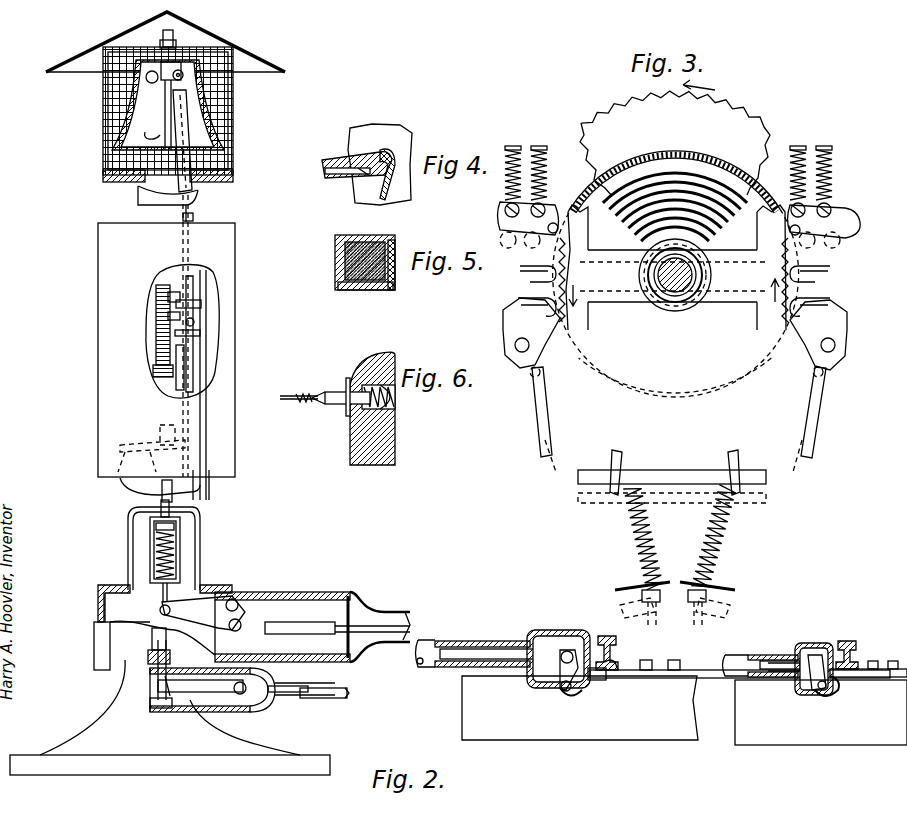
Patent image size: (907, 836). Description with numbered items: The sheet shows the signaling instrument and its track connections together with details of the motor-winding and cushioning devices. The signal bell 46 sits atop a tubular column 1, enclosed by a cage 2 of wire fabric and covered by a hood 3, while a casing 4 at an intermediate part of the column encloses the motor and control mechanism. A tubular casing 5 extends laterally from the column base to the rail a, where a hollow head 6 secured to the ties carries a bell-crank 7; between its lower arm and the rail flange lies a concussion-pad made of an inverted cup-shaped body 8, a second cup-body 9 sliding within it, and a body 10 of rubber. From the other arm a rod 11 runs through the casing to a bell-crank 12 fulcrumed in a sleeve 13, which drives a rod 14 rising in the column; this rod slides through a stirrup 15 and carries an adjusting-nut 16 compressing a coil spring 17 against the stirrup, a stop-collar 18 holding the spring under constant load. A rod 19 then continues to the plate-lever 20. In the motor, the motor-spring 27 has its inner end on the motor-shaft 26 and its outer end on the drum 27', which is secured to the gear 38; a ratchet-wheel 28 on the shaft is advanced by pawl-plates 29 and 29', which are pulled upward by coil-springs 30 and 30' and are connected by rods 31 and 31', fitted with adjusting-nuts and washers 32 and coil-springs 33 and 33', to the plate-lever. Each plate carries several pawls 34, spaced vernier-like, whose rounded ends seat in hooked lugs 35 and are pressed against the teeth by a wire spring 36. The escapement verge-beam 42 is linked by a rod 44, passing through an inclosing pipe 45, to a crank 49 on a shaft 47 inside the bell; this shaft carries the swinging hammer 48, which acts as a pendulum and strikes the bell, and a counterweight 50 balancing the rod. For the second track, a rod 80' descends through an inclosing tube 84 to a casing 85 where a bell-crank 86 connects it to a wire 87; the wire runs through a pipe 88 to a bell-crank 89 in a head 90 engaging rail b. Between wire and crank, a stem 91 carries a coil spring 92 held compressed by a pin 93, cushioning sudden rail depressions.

In FIG. 2, the tubular post or column 1 is at (202, 550).
In FIG. 2, the cage 2 is at (103, 100).
In FIG. 2, the hood 3 is at (90, 58).
In FIG. 2, the casing 4 is at (110, 384).
In FIG. 2, the tubular casing 5 is at (430, 645).
In FIG. 2, the hollow head 6 is at (557, 632).
In FIG. 2, the bell-crank 7 is at (585, 694).
In FIG. 2, the inverted cup-shaped body 8 is at (602, 676).
In FIG. 5, the inverted cup-shaped body 8 is at (385, 250).
In FIG. 2, the second cup-body 9 is at (598, 683).
In FIG. 5, the second cup-body 9 is at (391, 286).
In FIG. 5, the body of resilient material 10 is at (352, 284).
In FIG. 2, the rod 11 is at (366, 640).
In FIG. 2, the bell-crank 12 is at (248, 610).
In FIG. 2, the sleeve 13 is at (268, 592).
In FIG. 2, the rod 14 is at (160, 608).
In FIG. 2, the stirrup 15 is at (162, 540).
In FIG. 2, the adjusting-nut 16 is at (180, 535).
In FIG. 2, the coil spring 17 is at (156, 557).
In FIG. 2, the stop-collar 18 is at (190, 596).
In FIG. 2, the rod 19 is at (185, 512).
In FIG. 3, the plate-lever 20 is at (672, 472).
In FIG. 3, the motor-shaft 26 is at (675, 280).
In FIG. 3, the motor-spring 27 is at (684, 268).
In FIG. 2, the drum 27' is at (145, 330).
In FIG. 3, the drum 27' is at (676, 265).
In FIG. 3, the ratchet-wheel 28 is at (642, 220).
In FIG. 4, the pawl-plate 29 is at (381, 152).
In FIG. 3, the pawl-plate 29 is at (642, 255).
In FIG. 3, the pawl-plate 29' is at (834, 225).
In FIG. 3, the coil-spring 30 is at (541, 176).
In FIG. 3, the coil-spring 30' is at (812, 169).
In FIG. 3, the rod 31 is at (576, 431).
In FIG. 2, the rod 31' is at (153, 382).
In FIG. 3, the rod 31' is at (793, 431).
In FIG. 3, the adjusting-nuts and washers 32 is at (684, 585).
In FIG. 3, the coil-spring 33 is at (627, 539).
In FIG. 3, the coil-spring 33' is at (724, 536).
In FIG. 4, the pawls 34 is at (392, 185).
In FIG. 3, the pawls 34 is at (557, 272).
In FIG. 4, the lugs 35 is at (348, 160).
In FIG. 3, the lugs 35 is at (520, 275).
In FIG. 4, the spring 36 is at (370, 178).
In FIG. 3, the spring 36 is at (505, 245).
In FIG. 2, the gear 38 is at (160, 330).
In FIG. 3, the gear 38 is at (760, 118).
In FIG. 2, the verge-beam 42 is at (194, 322).
In FIG. 2, the rod 44 is at (190, 96).
In FIG. 2, the inclosing pipe 45 is at (173, 177).
In FIG. 2, the bell 46 is at (225, 137).
In FIG. 2, the shaft 47 is at (172, 70).
In FIG. 2, the swinging hammer 48 is at (158, 133).
In FIG. 2, the crank 49 is at (183, 78).
In FIG. 2, the counterweight 50 is at (153, 83).
In FIG. 2, the rod 80' is at (191, 506).
In FIG. 2, the inclosing tube 84 is at (209, 489).
In FIG. 2, the casing 85 is at (233, 708).
In FIG. 2, the bell-crank 86 is at (206, 681).
In FIG. 2, the wire 87 is at (295, 692).
In FIG. 6, the wire 87 is at (290, 402).
In FIG. 2, the pipe 88 is at (340, 703).
In FIG. 2, the bell-crank 89 is at (830, 692).
In FIG. 6, the bell-crank 89 is at (392, 438).
In FIG. 2, the head 90 is at (808, 645).
In FIG. 6, the stem 91 is at (343, 404).
In FIG. 6, the coil spring 92 is at (392, 400).
In FIG. 6, the pin 93 is at (347, 390).
In FIG. 2, the rail a is at (606, 636).
In FIG. 2, the rail b is at (850, 641).